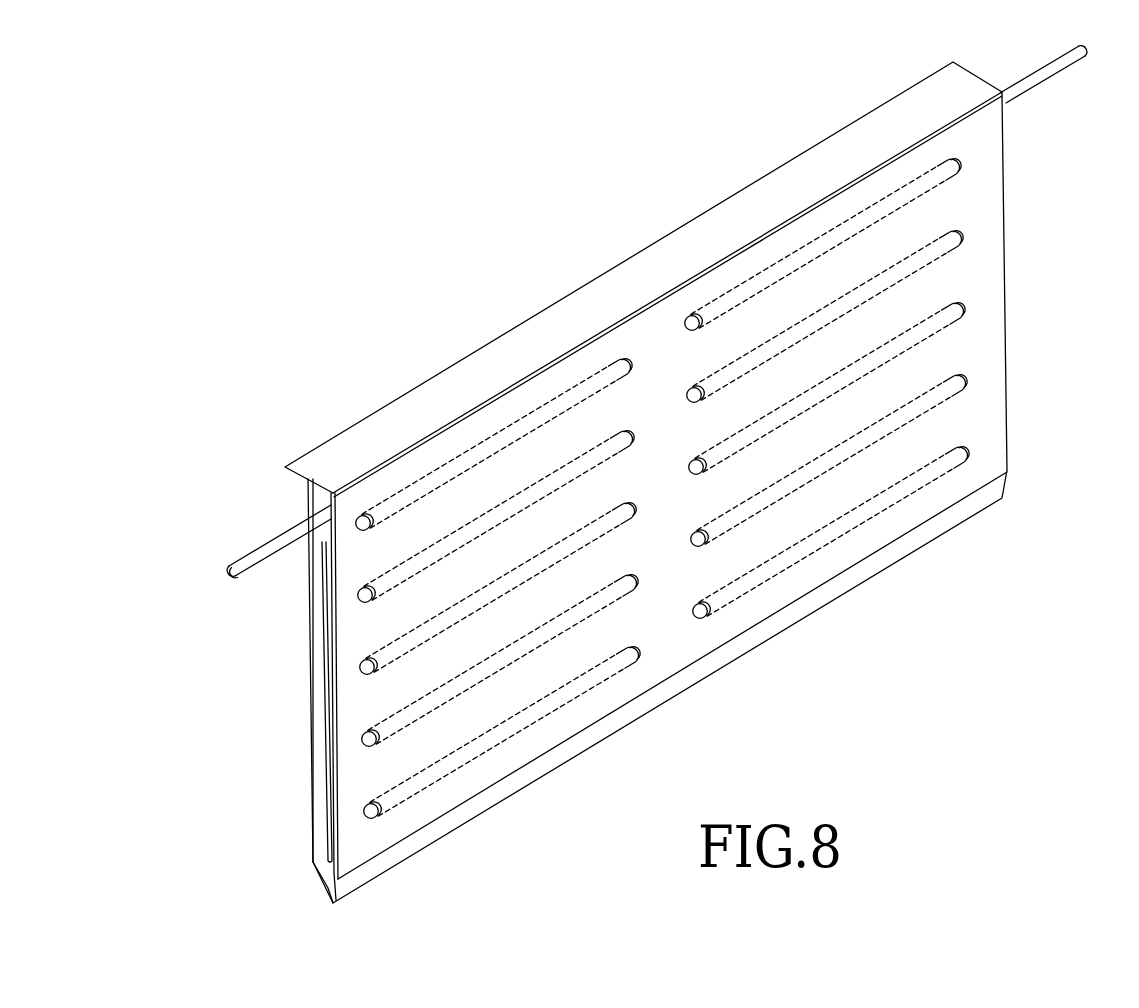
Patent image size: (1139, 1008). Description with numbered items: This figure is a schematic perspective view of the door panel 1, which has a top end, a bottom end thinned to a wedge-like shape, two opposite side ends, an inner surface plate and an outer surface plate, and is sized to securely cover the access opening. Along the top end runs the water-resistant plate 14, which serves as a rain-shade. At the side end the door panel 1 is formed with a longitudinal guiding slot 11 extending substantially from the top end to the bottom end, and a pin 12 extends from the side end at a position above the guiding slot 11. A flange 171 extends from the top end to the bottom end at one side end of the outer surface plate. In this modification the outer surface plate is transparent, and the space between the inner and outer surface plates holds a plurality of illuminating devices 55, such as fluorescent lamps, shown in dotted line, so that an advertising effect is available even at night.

The door panel 1 is at (1005, 325).
The water-resistant plate 14 is at (637, 252).
The longitudinal guiding slot 11 is at (327, 782).
The flange 171 is at (332, 888).
The pin 12 is at (267, 547).
The illuminating device 55 is at (483, 445).